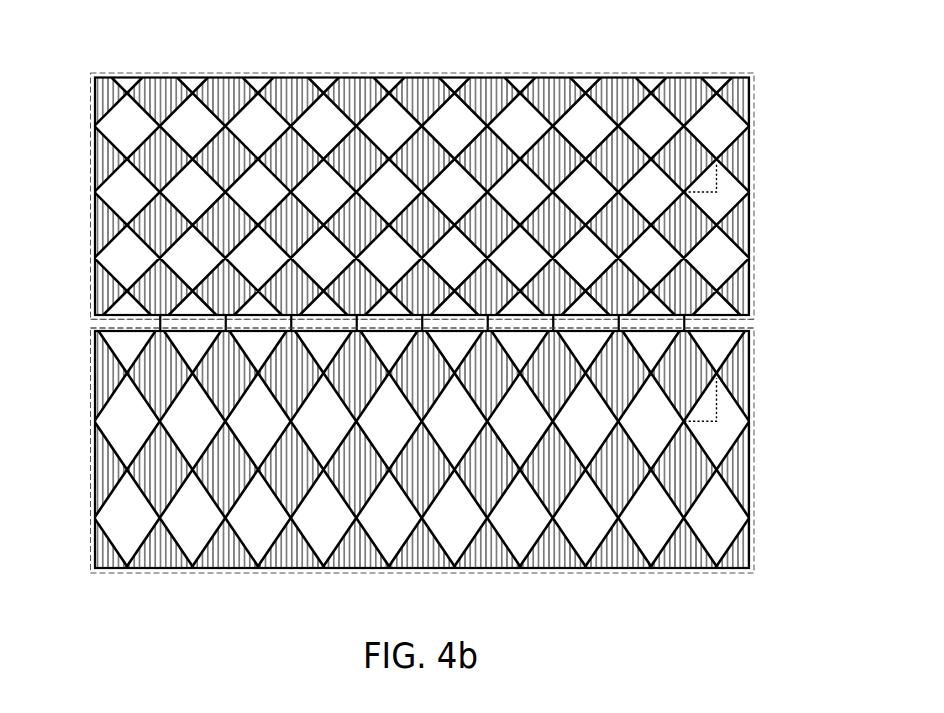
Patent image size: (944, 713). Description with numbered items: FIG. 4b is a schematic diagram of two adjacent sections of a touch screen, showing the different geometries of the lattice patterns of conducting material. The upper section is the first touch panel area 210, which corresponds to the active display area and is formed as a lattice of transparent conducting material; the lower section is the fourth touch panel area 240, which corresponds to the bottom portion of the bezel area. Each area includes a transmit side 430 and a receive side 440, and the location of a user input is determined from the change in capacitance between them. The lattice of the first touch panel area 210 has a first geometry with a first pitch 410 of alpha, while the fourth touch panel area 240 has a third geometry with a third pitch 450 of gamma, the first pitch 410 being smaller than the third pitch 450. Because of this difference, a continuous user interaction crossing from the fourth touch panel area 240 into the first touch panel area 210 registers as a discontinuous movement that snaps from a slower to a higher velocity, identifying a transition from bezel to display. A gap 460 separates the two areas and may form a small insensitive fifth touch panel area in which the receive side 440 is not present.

The first touch panel area 210 is at (468, 170).
The fourth touch panel area 240 is at (95, 436).
The first pitch 410 is at (732, 198).
The transmit side 430 is at (650, 117).
The receive side 440 is at (688, 95).
The third pitch 450 is at (735, 429).
The gap 460 is at (758, 323).